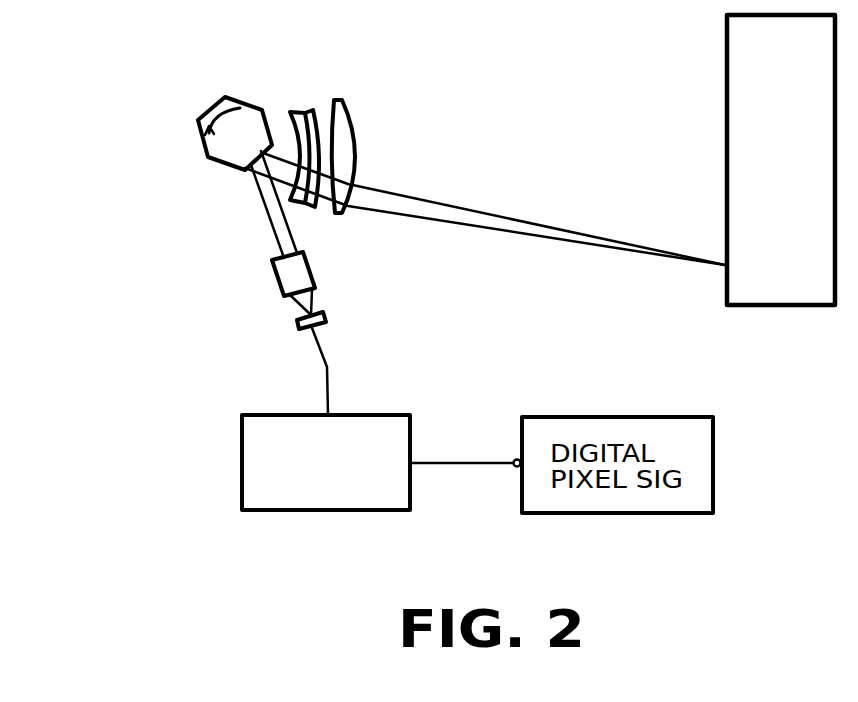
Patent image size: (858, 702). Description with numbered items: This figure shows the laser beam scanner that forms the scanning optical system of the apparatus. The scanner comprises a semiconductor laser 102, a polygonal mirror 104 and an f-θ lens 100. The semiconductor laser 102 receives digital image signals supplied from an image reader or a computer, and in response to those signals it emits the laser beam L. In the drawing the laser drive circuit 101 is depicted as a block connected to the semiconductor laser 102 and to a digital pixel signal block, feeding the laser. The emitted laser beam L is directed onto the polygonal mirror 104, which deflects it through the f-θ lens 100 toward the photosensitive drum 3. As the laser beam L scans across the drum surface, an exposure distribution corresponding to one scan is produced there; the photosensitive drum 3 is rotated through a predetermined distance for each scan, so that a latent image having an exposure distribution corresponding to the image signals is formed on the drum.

The photosensitive drum 3 is at (725, 80).
The f-θ lens 100 is at (367, 120).
The laser drive circuit 101 is at (385, 413).
The semiconductor laser 102 is at (327, 317).
The polygonal mirror 104 is at (217, 172).
The laser beam L is at (568, 230).